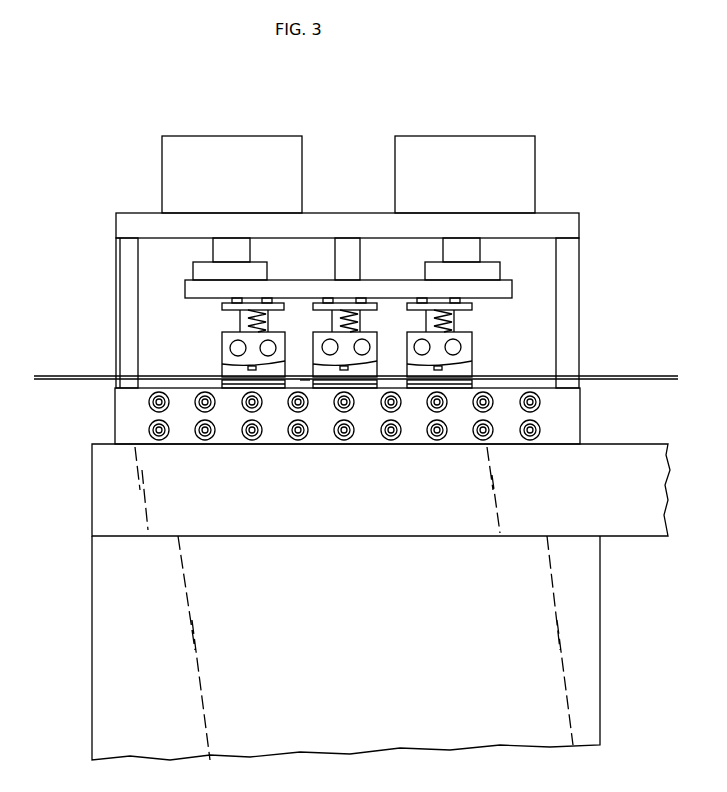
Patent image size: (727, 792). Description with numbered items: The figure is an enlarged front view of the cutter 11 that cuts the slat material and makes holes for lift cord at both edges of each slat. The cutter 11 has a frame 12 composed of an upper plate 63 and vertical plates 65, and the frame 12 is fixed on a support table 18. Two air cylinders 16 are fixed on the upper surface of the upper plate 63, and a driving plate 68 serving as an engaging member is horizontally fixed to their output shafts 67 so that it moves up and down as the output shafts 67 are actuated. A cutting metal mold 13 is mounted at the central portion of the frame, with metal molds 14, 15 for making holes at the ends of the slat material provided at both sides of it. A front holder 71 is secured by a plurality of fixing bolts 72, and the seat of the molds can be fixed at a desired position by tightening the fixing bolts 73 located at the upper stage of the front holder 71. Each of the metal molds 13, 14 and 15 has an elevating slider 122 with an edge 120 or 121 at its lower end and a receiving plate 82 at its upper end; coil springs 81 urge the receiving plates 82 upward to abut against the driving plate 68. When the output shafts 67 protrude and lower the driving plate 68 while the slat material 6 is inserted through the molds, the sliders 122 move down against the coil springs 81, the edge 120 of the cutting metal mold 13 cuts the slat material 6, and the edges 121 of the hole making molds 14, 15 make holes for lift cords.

The cutter 11 is at (565, 150).
The frame 12 is at (122, 213).
The air cylinders 16 is at (281, 137).
The driving plate 68 is at (343, 285).
The upper plate 63 is at (564, 230).
The output shafts 67 is at (215, 250).
The receiving plate 82 is at (310, 297).
The coil springs 81 is at (240, 318).
The elevating slider 122 is at (268, 318).
The vertical plates 65 is at (122, 305).
The slat material 6 is at (603, 375).
The fixing bolts 73 is at (240, 395).
The edge 121 is at (235, 372).
The front holder 71 is at (572, 410).
The fixing bolts 72 is at (206, 432).
The metal mold 14 is at (222, 388).
The cutting metal mold 13 is at (340, 385).
The metal mold 15 is at (413, 388).
The edge 120 is at (320, 385).
The support table 18 is at (644, 458).